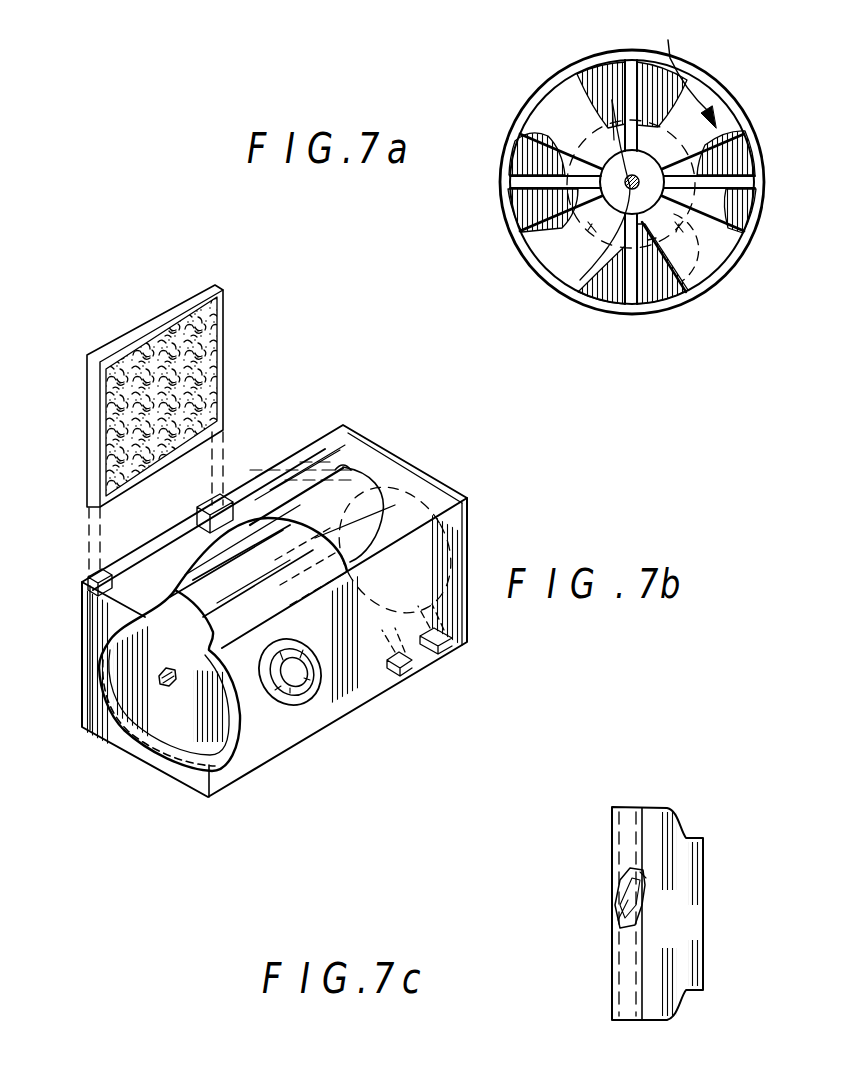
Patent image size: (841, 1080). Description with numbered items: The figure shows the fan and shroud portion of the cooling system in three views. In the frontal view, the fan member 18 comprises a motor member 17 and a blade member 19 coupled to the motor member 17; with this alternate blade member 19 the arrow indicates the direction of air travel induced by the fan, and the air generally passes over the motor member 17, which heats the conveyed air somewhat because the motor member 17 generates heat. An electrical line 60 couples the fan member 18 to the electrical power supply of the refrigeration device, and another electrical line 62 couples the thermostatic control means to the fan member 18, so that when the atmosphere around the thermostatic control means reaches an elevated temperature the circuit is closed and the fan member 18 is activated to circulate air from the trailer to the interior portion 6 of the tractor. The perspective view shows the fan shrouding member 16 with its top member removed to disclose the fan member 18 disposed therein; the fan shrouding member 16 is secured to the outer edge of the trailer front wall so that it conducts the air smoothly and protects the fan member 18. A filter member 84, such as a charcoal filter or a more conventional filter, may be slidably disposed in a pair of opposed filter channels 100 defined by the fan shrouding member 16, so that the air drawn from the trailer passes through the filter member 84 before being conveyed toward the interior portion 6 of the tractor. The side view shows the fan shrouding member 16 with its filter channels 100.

In FIG. 7a, the interior portion of the tractor 6 is at (689, 71).
In FIG. 7a, the motor member 17 is at (586, 228).
In FIG. 7a, the blade member 19 is at (648, 281).
In FIG. 7a, the electrical line 60 is at (695, 192).
In FIG. 7a, the electrical line 62 is at (668, 308).
In FIG. 7b, the fan shrouding member 16 is at (470, 492).
In FIG. 7b, the fan member 18 is at (237, 640).
In FIG. 7b, the filter member 84 is at (159, 448).
In FIG. 7b, the filter channels 100 is at (199, 520).